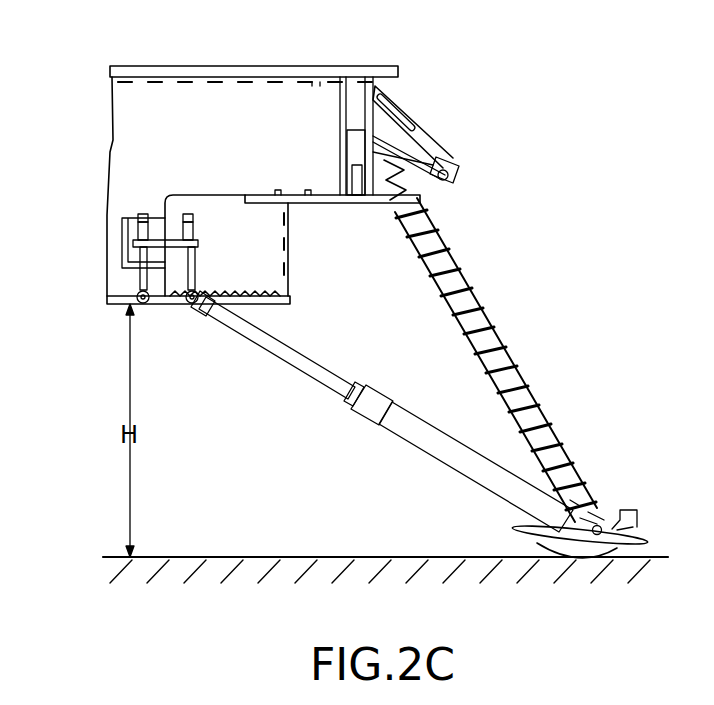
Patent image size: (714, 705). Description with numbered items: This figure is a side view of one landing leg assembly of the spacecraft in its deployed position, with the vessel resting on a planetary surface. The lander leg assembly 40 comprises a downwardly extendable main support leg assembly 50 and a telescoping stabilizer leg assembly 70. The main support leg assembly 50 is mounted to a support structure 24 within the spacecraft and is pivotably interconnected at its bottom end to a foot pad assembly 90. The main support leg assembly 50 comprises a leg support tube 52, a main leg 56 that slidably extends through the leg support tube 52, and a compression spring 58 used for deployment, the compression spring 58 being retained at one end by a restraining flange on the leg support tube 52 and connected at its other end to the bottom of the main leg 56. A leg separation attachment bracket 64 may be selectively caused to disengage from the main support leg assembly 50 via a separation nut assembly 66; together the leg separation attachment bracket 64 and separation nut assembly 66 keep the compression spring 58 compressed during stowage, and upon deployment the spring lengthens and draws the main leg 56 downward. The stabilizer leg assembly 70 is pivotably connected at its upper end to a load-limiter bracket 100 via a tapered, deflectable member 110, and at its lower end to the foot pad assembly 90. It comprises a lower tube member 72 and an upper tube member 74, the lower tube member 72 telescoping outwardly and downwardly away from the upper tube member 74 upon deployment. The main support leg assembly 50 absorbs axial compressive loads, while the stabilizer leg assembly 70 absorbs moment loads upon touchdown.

The support structure 24 is at (306, 100).
The lander leg assembly 40 is at (578, 304).
The main support leg assembly 50 is at (410, 287).
The leg support tube 52 is at (424, 203).
The main leg 56 is at (463, 271).
The compression spring 58 is at (526, 388).
The leg separation attachment bracket 64 is at (410, 129).
The separation nut assembly 66 is at (447, 166).
The stabilizer leg assembly 70 is at (405, 402).
The lower tube member 72 is at (458, 481).
The upper tube member 74 is at (292, 356).
The foot pad assembly 90 is at (588, 561).
The load-limiter bracket 100 is at (140, 250).
The tapered, deflectable member 110 is at (194, 256).